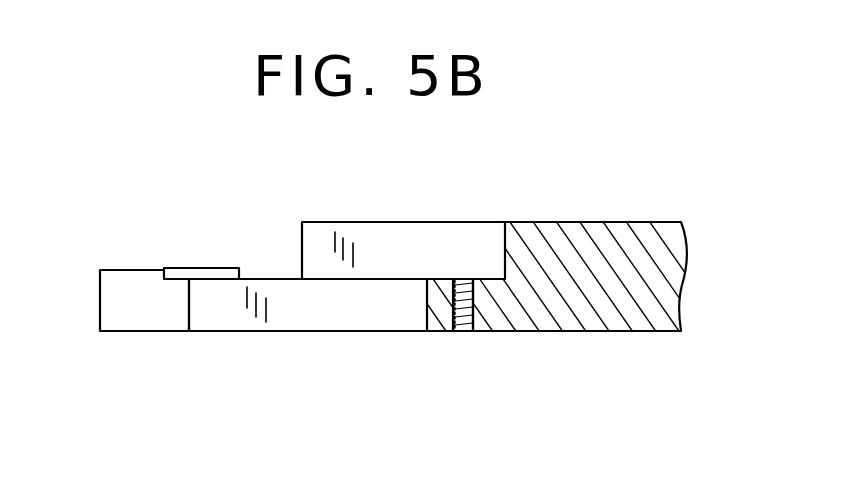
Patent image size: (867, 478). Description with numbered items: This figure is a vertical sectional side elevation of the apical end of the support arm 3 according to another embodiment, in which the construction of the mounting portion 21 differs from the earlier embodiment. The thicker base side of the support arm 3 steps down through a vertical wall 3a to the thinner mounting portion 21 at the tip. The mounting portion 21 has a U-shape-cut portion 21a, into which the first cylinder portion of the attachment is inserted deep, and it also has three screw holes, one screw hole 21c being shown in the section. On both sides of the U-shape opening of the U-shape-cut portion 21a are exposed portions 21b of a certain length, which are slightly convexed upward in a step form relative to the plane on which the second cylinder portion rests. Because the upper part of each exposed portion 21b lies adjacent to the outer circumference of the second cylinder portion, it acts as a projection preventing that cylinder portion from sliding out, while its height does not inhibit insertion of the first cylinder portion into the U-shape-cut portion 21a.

The support arm 3 is at (603, 220).
The vertical wall (step portion) 3a is at (505, 250).
The mounting portion 21 is at (177, 355).
The U-shape-cut portion 21a is at (357, 320).
The exposed portion 21b is at (132, 268).
The screw hole 21c is at (472, 314).